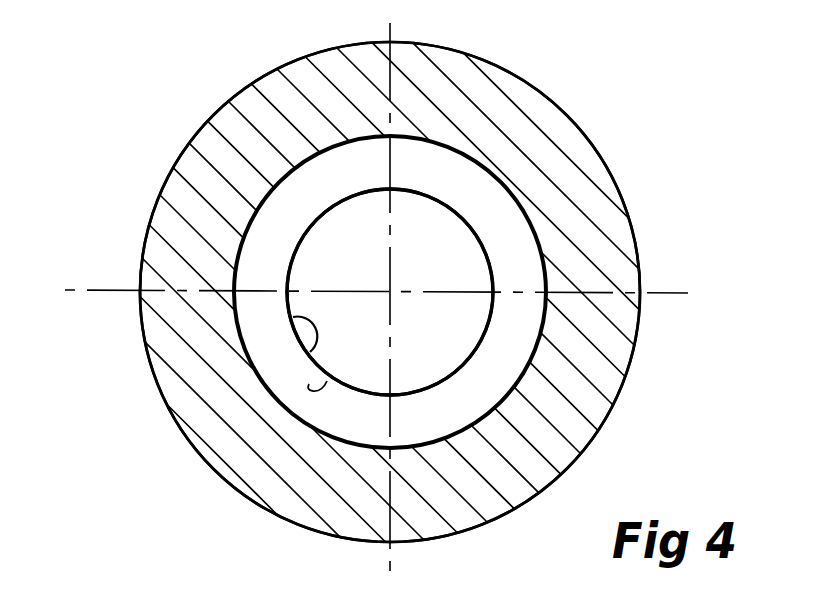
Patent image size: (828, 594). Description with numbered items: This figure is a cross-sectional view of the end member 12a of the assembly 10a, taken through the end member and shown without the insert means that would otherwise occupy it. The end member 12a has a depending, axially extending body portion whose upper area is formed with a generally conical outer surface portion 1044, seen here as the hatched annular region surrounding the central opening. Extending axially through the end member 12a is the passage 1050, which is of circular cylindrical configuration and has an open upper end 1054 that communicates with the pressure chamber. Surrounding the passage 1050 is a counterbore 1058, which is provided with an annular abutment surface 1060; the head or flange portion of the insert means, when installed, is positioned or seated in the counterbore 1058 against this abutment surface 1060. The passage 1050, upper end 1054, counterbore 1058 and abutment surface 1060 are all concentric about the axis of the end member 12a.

The assembly 10a is at (631, 138).
The end member 12a is at (636, 359).
The conical outer surface portion 1044 is at (629, 221).
The open upper end 1054 is at (314, 226).
The passage 1050 is at (437, 203).
The counterbore 1058 is at (307, 355).
The annular abutment surface 1060 is at (327, 381).